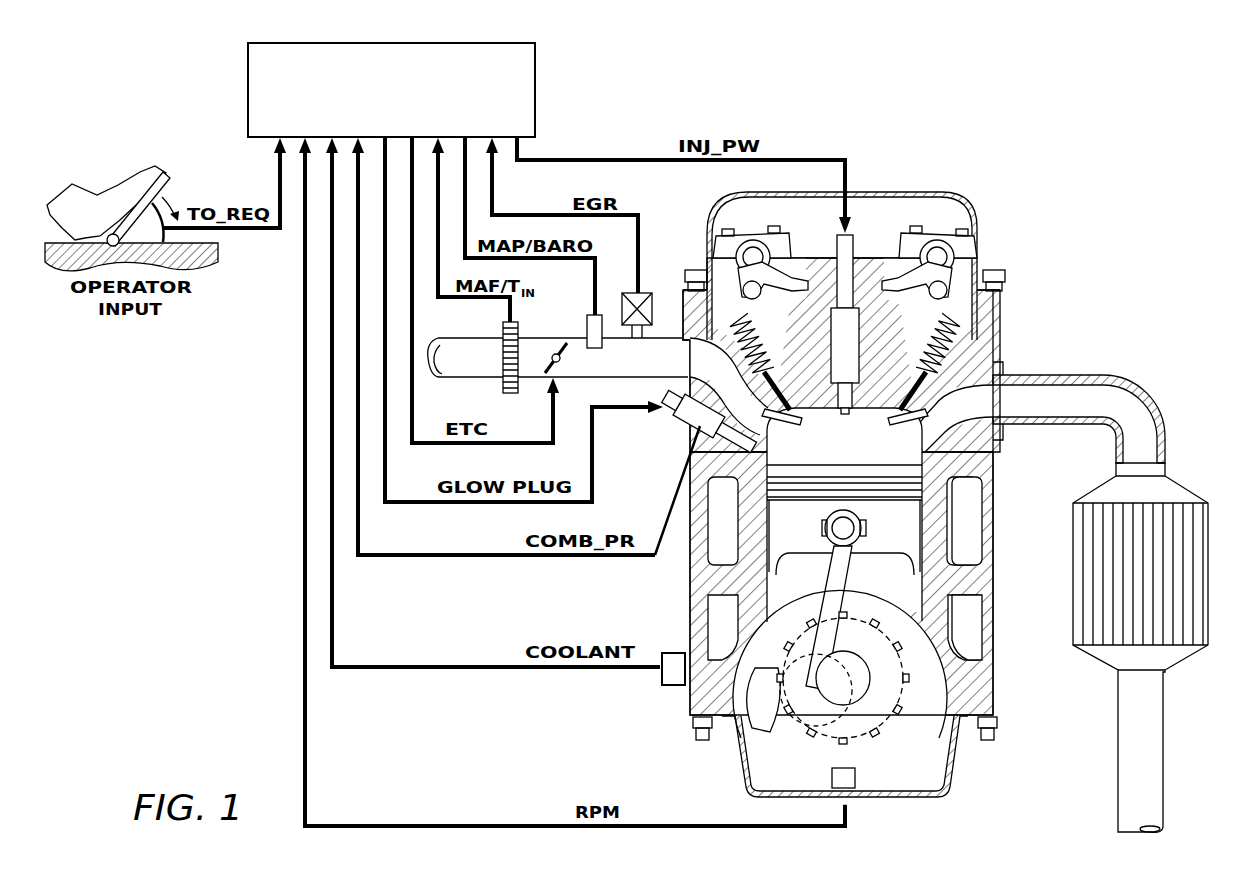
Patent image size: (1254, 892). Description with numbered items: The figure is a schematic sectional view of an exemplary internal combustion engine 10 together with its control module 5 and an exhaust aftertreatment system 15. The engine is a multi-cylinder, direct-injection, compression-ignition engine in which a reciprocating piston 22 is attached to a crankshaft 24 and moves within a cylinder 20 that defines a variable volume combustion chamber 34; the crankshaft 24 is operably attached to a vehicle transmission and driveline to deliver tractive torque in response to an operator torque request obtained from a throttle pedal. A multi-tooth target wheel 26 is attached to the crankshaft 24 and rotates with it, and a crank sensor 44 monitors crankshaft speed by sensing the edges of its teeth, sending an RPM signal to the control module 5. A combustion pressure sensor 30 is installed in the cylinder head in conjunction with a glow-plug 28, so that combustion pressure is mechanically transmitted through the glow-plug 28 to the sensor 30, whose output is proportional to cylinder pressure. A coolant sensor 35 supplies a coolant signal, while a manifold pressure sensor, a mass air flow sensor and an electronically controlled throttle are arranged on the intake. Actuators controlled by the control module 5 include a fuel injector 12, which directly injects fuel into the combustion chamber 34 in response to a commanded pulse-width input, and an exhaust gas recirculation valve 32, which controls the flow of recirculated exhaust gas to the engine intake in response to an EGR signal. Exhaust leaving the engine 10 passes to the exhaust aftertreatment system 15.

The control module 5 is at (512, 50).
The internal combustion engine 10 is at (896, 494).
The fuel injector 12 is at (848, 245).
The exhaust aftertreatment system 15 is at (1185, 497).
The cylinder 20 is at (955, 447).
The piston 22 is at (810, 536).
The crankshaft 24 is at (925, 682).
The multi-tooth target wheel 26 is at (888, 697).
The glow-plug 28 is at (617, 410).
The combustion pressure sensor 30 is at (620, 560).
The exhaust gas recirculation valve 32 is at (648, 293).
The combustion chamber 34 is at (855, 453).
The coolant sensor 35 is at (620, 670).
The crank sensor 44 is at (852, 777).